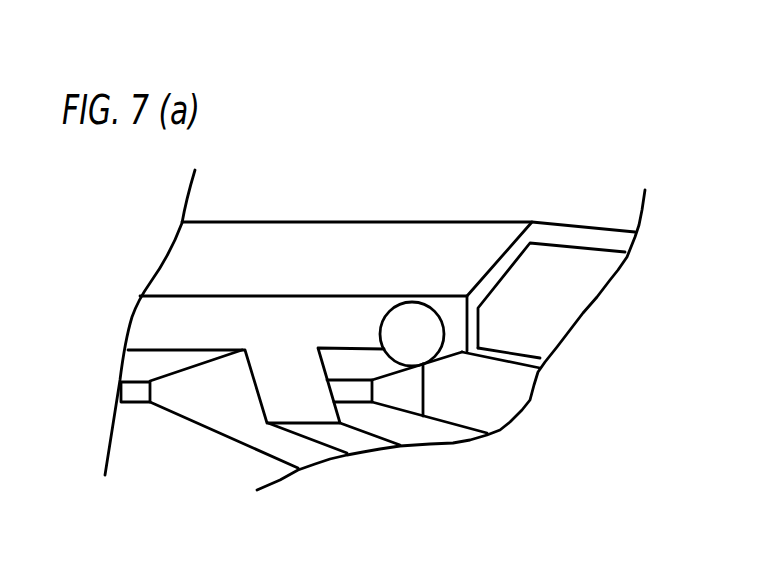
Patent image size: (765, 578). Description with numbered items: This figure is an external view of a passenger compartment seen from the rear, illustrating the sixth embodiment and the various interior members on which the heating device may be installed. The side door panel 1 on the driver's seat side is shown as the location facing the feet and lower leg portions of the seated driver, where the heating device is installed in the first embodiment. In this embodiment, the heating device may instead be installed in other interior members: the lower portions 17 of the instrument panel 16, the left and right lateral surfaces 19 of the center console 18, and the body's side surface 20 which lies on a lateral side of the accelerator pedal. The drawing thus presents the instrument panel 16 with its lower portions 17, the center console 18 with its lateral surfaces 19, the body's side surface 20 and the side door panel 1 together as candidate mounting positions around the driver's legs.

The side door panel 1 is at (498, 385).
The instrument panel 16 is at (338, 313).
The lower portions of instrument panel 17 is at (138, 367).
The center console 18 is at (285, 387).
The left and right lateral surfaces of center console 19 is at (212, 387).
The body's side surface 20 is at (402, 397).